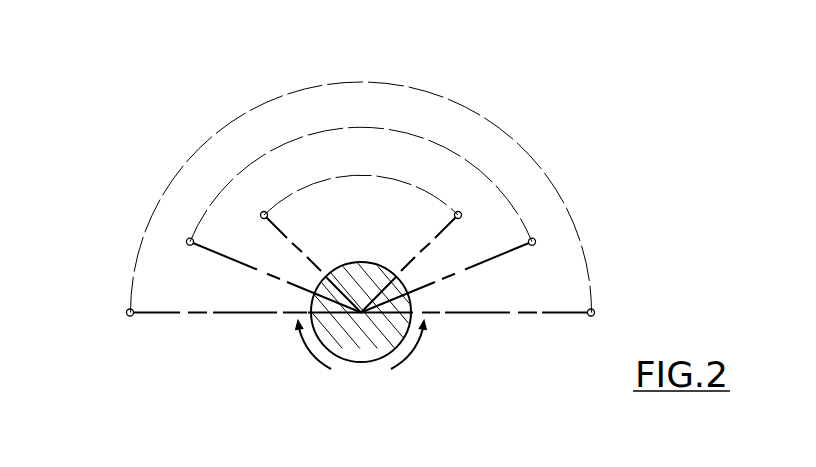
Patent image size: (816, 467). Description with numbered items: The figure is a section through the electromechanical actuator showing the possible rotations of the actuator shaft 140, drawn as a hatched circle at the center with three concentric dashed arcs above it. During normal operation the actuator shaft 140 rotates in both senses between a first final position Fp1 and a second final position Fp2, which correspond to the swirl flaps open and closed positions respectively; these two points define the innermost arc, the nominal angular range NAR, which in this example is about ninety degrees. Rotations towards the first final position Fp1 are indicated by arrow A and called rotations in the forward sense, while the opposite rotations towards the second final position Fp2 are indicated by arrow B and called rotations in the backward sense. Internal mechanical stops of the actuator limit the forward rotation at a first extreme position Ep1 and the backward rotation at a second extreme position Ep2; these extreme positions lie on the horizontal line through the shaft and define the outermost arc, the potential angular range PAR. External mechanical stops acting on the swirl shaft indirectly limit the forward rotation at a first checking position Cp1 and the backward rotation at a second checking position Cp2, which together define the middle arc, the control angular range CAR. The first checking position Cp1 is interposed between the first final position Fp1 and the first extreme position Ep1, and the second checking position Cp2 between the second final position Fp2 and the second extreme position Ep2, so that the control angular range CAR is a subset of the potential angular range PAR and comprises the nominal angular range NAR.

The actuator shaft 140 is at (357, 337).
The first extreme position Ep1 is at (591, 313).
The second extreme position Ep2 is at (130, 312).
The first checking position Cp1 is at (532, 242).
The second checking position Cp2 is at (190, 242).
The first final position Fp1 is at (458, 215).
The second final position Fp2 is at (264, 214).
The potential angular range PAR is at (361, 184).
The control angular range CAR is at (361, 170).
The nominal angular range NAR is at (361, 180).
The forward sense rotation arrow A is at (308, 347).
The backward sense rotation arrow B is at (411, 349).